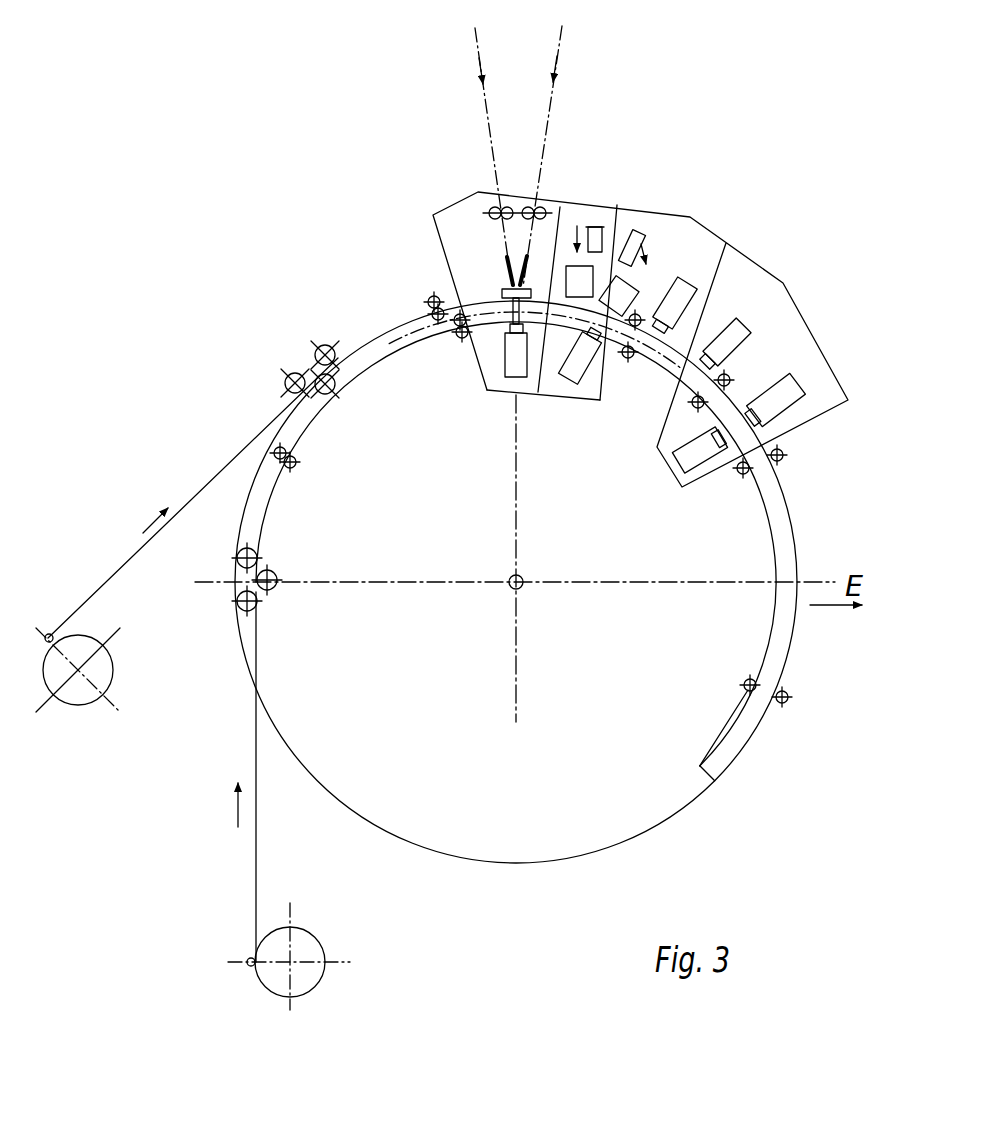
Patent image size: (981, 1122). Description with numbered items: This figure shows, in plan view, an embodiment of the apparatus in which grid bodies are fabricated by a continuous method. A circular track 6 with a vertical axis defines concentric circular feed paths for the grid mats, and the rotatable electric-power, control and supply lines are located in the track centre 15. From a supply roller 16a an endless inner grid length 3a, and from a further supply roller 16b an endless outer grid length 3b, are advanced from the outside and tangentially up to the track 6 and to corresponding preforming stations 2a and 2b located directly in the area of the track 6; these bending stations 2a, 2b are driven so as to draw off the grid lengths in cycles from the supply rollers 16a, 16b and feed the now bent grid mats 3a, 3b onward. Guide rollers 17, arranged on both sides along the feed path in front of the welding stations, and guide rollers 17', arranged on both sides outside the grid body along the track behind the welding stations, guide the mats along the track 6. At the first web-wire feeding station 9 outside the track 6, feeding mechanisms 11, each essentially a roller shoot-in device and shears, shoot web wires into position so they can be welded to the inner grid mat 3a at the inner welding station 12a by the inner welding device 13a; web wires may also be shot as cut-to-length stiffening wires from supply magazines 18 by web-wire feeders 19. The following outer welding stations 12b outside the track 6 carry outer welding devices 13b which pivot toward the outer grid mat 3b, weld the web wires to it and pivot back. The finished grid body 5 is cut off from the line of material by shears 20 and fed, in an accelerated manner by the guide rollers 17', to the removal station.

The preforming station 2a is at (244, 602).
The preforming station 2b is at (293, 375).
The inner grid length 3a is at (255, 867).
The outer grid length 3b is at (108, 583).
The grid body 5 is at (778, 652).
The circular track 6 is at (533, 865).
The web-wire feeding station 9 is at (457, 228).
The feeding mechanisms 11 is at (490, 211).
The inner welding station 12a is at (492, 350).
The outer welding station 12b is at (782, 320).
The inner welding device 13a is at (545, 345).
The outer welding device 13b is at (733, 330).
The track centre 15 is at (522, 586).
The supply roller 16a is at (307, 948).
The supply roller 16b is at (100, 672).
The guide rollers 17 is at (298, 361).
The guide rollers 17' is at (728, 549).
The supply magazines 18 is at (643, 262).
The web-wire feeders 19 is at (599, 225).
The shears 20 is at (786, 388).